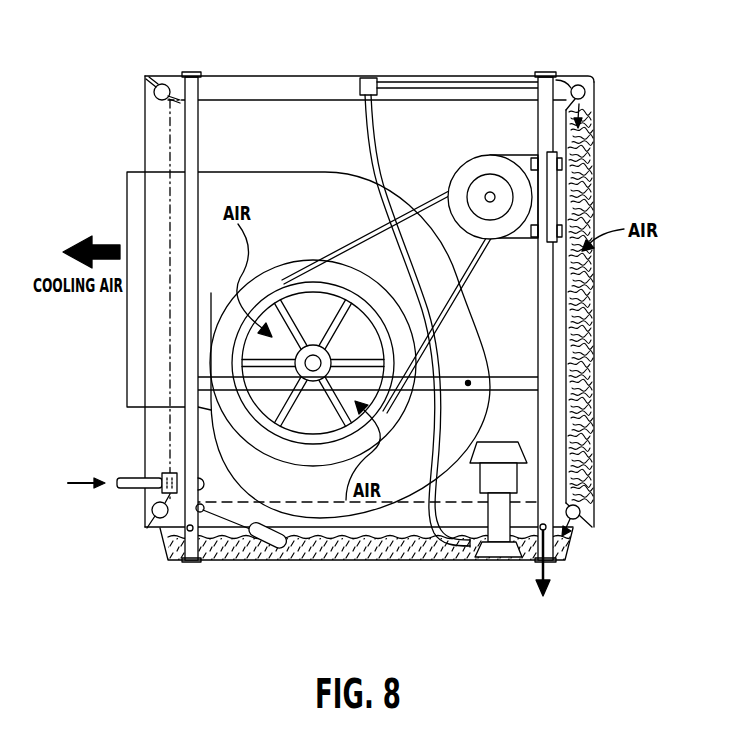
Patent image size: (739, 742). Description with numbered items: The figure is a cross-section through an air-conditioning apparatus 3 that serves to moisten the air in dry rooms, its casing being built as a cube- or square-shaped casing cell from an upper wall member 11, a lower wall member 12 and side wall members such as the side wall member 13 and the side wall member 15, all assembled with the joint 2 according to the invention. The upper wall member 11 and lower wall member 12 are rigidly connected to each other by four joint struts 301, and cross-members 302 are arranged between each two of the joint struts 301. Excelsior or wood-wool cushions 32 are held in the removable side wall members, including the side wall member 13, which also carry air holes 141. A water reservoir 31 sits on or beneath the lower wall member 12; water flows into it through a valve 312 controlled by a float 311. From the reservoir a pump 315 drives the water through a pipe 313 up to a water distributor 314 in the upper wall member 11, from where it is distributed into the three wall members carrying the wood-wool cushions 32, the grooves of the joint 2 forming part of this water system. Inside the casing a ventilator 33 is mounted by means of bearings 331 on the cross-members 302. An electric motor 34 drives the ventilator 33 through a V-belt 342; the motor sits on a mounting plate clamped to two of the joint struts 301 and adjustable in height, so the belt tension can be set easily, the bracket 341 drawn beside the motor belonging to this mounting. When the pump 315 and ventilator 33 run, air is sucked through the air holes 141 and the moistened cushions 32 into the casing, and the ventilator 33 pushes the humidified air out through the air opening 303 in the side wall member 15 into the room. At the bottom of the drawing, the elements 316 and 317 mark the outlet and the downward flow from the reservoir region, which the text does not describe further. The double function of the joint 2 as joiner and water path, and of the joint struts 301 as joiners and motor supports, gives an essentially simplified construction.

The air-conditioning apparatus 3 is at (166, 66).
The upper wall member 11 is at (271, 77).
The side wall member 15 is at (145, 135).
The side wall member 13 is at (595, 412).
The joint strut 301 is at (194, 122).
The cross-member 302 is at (508, 378).
The air opening 303 is at (127, 342).
The pipe 313 is at (373, 150).
The electric motor 34 is at (490, 157).
The motor mounting bracket 341 is at (556, 190).
The V-belt 342 is at (477, 250).
The ventilator 33 is at (281, 278).
The bearing 331 is at (312, 406).
The water distributor 314 is at (585, 90).
The air hole 141 is at (592, 263).
The wood-wool cushion 32 is at (591, 345).
The joint 2 is at (581, 507).
The lower wall member 12 is at (582, 525).
The water reservoir 31 is at (370, 561).
The float 311 is at (272, 543).
The valve 312 is at (124, 489).
The pump 315 is at (492, 553).
The drain outlet 316 is at (562, 556).
The drain flow 317 is at (552, 587).